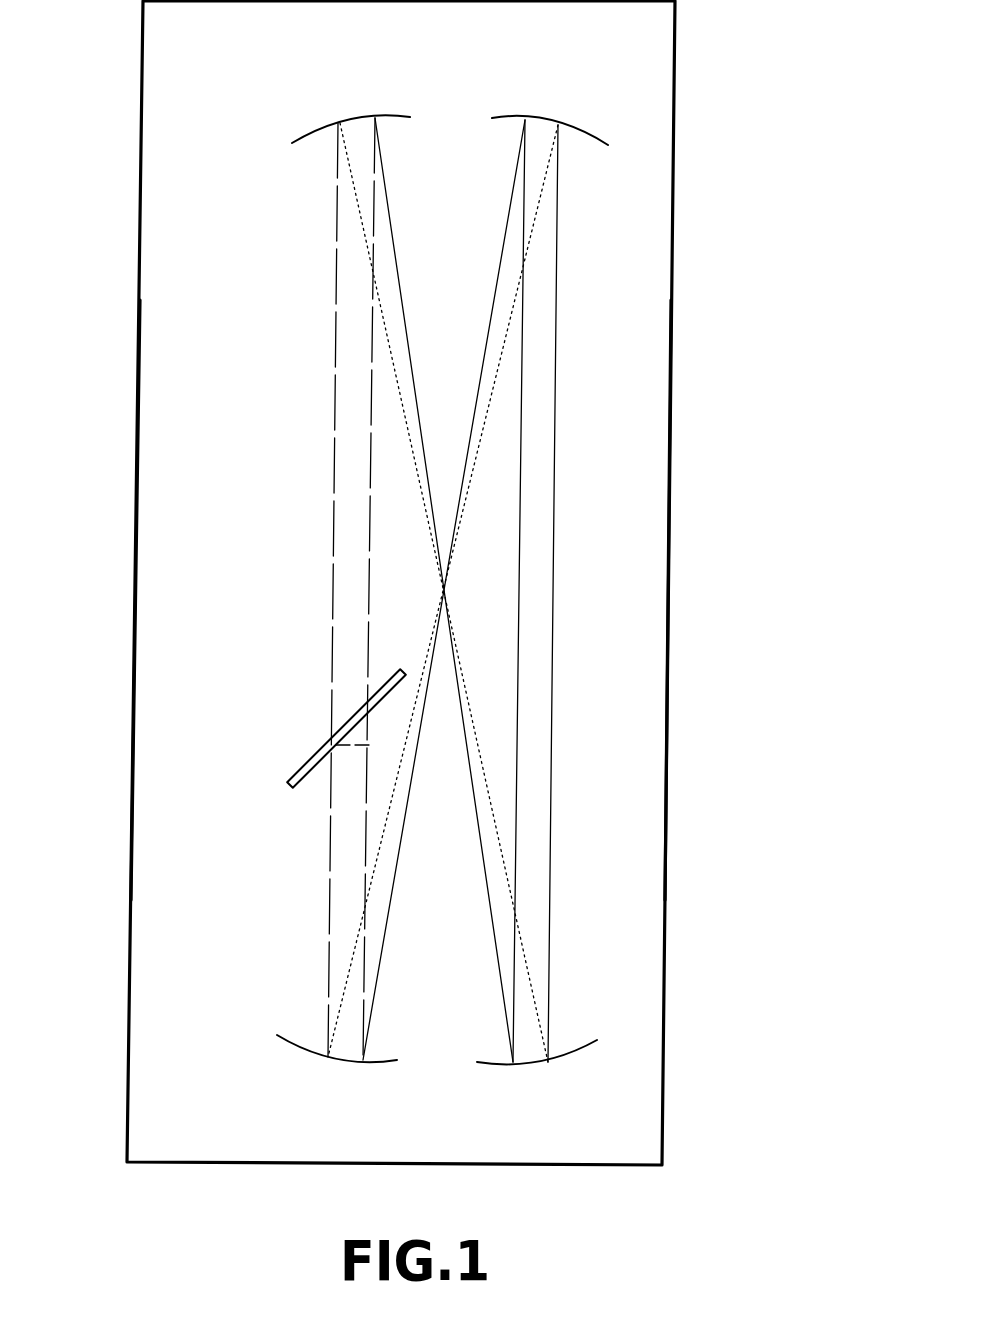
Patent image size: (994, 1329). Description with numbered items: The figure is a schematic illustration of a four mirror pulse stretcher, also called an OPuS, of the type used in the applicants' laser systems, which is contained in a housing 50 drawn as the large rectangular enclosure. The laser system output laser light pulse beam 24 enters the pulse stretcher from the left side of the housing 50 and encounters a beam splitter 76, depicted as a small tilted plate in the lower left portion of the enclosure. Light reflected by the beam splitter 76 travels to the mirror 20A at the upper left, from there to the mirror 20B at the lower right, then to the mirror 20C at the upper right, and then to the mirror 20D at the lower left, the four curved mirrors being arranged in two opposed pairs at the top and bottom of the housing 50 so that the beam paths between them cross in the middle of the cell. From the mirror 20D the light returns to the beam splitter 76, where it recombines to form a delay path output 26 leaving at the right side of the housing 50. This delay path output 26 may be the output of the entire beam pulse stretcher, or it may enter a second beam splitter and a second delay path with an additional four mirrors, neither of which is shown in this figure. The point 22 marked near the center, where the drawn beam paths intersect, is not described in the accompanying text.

The mirror 20A is at (353, 118).
The mirror 20B is at (527, 1062).
The mirror 20C is at (545, 118).
The mirror 20D is at (340, 1060).
The focal point (beam crossing point) 22 is at (478, 586).
The laser light pulse beam 24 is at (78, 707).
The delay path output 26 is at (600, 748).
The housing 50 is at (626, 419).
The beam splitter 76 is at (290, 790).